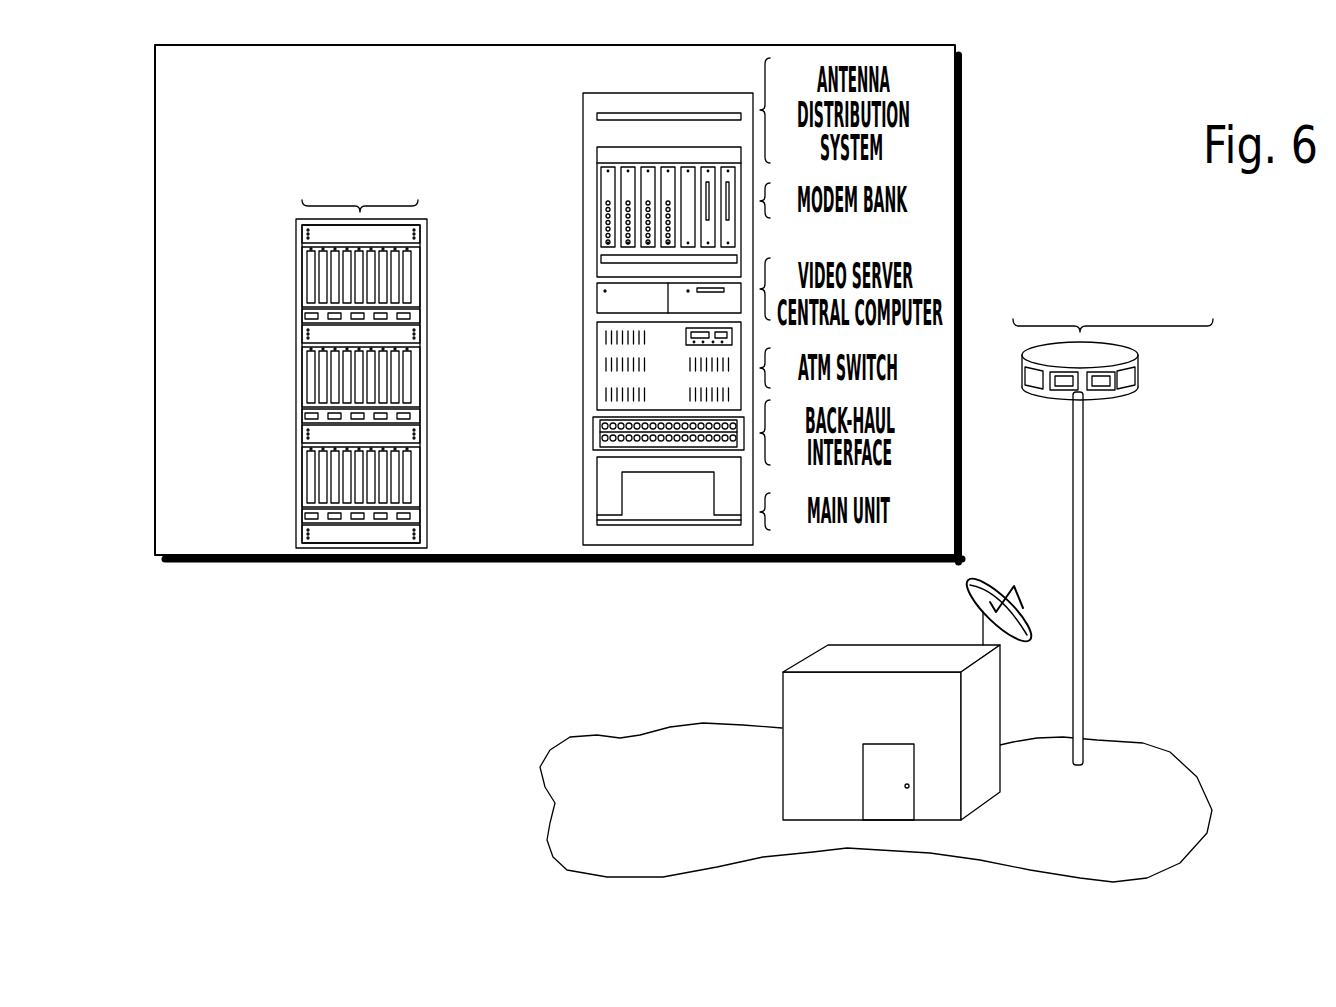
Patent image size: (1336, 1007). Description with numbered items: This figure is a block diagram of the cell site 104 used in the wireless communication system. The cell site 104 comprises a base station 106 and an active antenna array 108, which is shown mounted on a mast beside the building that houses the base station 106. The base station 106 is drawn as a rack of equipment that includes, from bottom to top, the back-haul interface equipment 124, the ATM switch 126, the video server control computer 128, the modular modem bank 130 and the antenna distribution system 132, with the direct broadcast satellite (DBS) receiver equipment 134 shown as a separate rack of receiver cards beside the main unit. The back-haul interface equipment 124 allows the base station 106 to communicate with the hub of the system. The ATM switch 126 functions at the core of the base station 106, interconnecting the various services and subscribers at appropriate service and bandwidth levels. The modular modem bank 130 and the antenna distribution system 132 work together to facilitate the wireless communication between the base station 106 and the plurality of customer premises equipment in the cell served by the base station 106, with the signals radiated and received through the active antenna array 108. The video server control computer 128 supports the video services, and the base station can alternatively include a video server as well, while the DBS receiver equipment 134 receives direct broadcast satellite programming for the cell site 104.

The cell site 104 is at (867, 840).
The base station 106 is at (787, 707).
The active antenna array 108 is at (1132, 377).
The back-haul interface equipment 124 is at (613, 425).
The ATM switch 126 is at (608, 363).
The video server control computer 128 is at (608, 295).
The modular modem bank 130 is at (627, 188).
The antenna distribution system 132 is at (583, 127).
The direct broadcast satellite (DBS) receiver equipment 134 is at (296, 317).